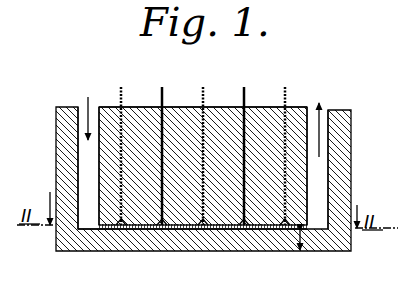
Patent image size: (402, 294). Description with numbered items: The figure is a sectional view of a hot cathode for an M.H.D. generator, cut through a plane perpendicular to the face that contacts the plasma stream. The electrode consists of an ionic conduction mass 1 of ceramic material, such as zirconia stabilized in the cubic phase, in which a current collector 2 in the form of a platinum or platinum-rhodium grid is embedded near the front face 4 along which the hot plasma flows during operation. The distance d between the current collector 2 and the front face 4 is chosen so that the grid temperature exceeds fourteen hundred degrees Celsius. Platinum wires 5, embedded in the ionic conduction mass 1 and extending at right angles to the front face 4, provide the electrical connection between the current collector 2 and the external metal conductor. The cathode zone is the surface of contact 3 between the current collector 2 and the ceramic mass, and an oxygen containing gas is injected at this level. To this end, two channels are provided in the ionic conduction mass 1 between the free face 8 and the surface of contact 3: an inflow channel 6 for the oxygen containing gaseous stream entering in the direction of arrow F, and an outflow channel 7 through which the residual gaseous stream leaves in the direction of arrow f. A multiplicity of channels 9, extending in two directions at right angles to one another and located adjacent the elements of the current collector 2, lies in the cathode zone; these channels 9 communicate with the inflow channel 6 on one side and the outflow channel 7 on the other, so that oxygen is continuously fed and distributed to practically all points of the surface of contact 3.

The ionic conduction mass 1 is at (295, 160).
The current collector 2 is at (222, 230).
The surface of contact 3 is at (100, 227).
The front face 4 is at (145, 250).
The platinum wires 5 is at (211, 84).
The channel for the inflow 6 is at (88, 183).
The channel for the outflow 7 is at (319, 190).
The free face 8 is at (112, 107).
The channels 9 is at (167, 233).
The arrow F is at (87, 107).
The arrow f is at (321, 123).
The distance d is at (310, 242).